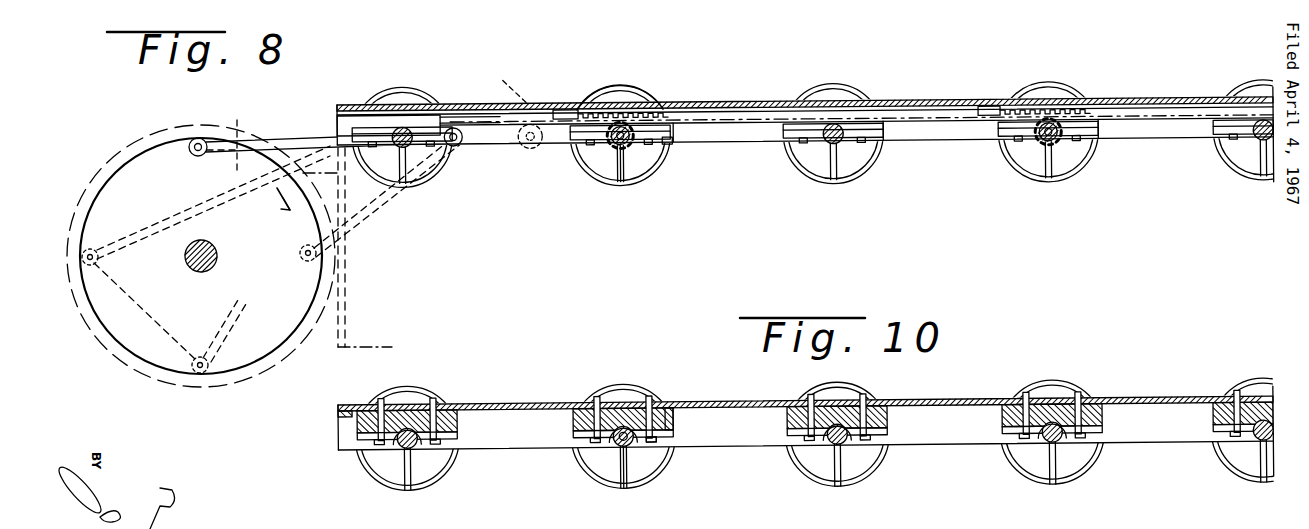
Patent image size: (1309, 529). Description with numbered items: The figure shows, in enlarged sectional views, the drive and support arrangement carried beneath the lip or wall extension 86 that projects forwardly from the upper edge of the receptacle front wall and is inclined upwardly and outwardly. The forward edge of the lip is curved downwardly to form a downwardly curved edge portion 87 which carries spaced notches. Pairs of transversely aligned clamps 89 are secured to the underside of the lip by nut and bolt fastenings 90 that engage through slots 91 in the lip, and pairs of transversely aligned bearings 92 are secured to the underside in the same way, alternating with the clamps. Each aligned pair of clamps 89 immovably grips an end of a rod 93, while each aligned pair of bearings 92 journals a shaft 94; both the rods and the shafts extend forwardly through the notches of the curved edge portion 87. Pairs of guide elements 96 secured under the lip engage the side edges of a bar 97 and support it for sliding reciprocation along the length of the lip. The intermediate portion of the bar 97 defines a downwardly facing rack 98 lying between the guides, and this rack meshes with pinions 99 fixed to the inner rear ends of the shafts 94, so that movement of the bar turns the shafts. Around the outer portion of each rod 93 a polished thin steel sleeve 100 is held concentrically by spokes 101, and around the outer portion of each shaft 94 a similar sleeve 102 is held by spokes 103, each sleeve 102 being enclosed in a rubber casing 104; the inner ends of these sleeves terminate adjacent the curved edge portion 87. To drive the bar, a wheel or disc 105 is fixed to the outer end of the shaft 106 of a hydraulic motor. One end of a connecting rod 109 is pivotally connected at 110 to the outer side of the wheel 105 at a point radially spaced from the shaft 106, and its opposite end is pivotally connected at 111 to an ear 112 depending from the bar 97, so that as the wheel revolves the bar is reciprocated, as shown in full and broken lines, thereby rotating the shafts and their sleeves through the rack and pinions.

In FIG. 8, the lip or wall extension 86 is at (930, 96).
In FIG. 10, the lip or wall extension 86 is at (494, 405).
In FIG. 8, the downwardly curved edge portion 87 is at (930, 147).
In FIG. 10, the downwardly curved edge portion 87 is at (522, 432).
In FIG. 8, the clamps 89 is at (795, 142).
In FIG. 10, the clamps 89 is at (362, 440).
In FIG. 8, the nut and bolt fastenings 90 is at (818, 100).
In FIG. 10, the nut and bolt fastenings 90 is at (440, 399).
In FIG. 10, the slots 91 is at (372, 411).
In FIG. 8, the bearings 92 is at (573, 152).
In FIG. 10, the bearings 92 is at (682, 418).
In FIG. 8, the rod 93 is at (840, 148).
In FIG. 10, the rod 93 is at (410, 442).
In FIG. 8, the shaft 94 is at (628, 152).
In FIG. 10, the shaft 94 is at (618, 447).
In FIG. 8, the guide elements 96 is at (566, 112).
In FIG. 8, the bar 97 is at (730, 120).
In FIG. 8, the rack 98 is at (684, 116).
In FIG. 8, the pinions 99 is at (613, 152).
In FIG. 8, the sleeve 100 is at (434, 185).
In FIG. 10, the sleeve 100 is at (418, 488).
In FIG. 8, the spokes 101 is at (836, 150).
In FIG. 8, the sleeve 102 is at (624, 89).
In FIG. 10, the sleeve 102 is at (627, 470).
In FIG. 8, the spokes 103 is at (622, 160).
In FIG. 8, the casing 104 is at (670, 160).
In FIG. 10, the casing 104 is at (662, 470).
In FIG. 8, the wheel or disc 105 is at (258, 358).
In FIG. 8, the shaft 106 is at (192, 273).
In FIG. 8, the connecting rod 109 is at (272, 137).
In FIG. 8, the pivotal connection 110 is at (198, 138).
In FIG. 8, the pivotal connection 111 is at (472, 124).
In FIG. 8, the ear 112 is at (466, 146).